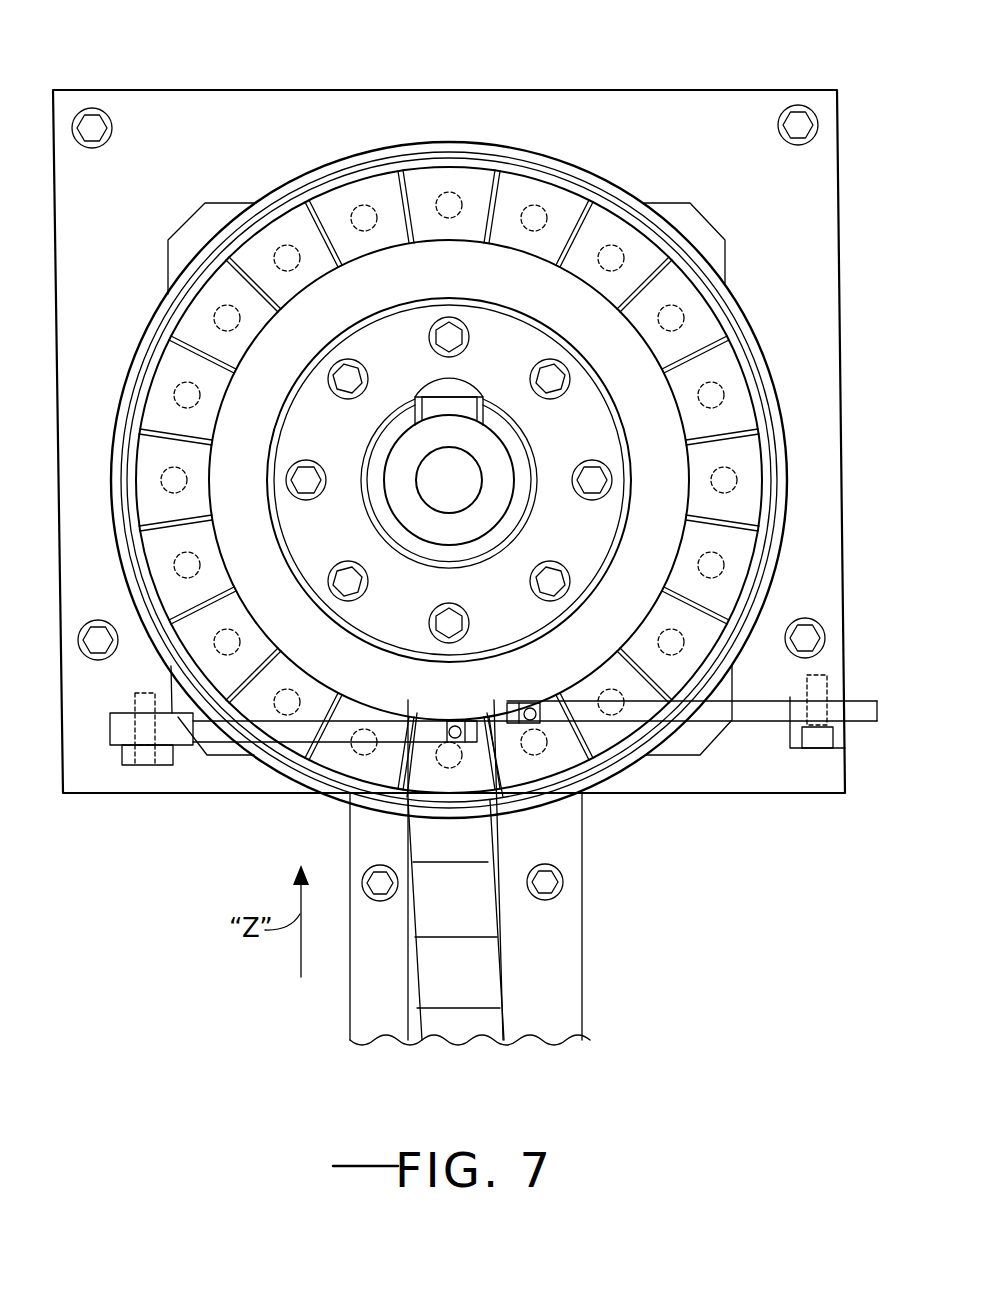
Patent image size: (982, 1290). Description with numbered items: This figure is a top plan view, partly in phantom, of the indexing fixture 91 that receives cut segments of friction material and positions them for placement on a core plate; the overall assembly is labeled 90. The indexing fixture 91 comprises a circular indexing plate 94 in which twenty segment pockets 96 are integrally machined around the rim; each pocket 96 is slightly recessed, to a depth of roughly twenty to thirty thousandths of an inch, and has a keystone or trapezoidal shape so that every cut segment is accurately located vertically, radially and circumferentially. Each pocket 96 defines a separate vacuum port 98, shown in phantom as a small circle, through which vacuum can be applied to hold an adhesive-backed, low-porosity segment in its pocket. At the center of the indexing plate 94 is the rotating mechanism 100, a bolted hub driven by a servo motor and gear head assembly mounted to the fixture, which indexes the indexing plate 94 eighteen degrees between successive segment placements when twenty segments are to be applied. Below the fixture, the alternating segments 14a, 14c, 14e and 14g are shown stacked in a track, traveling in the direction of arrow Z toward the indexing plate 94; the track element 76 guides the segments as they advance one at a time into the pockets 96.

The rotary actuator assembly 90 is at (287, 56).
The indexing fixture 91 is at (560, 148).
The indexing plate 94 is at (733, 301).
The segment pocket 96 is at (745, 385).
The vacuum port 98 is at (735, 480).
The rotating mechanism 100 is at (462, 297).
The segment 14a is at (407, 829).
The segment 14c is at (503, 888).
The segment 14e is at (503, 961).
The segment 14g is at (503, 1028).
The shaft 76 is at (407, 966).